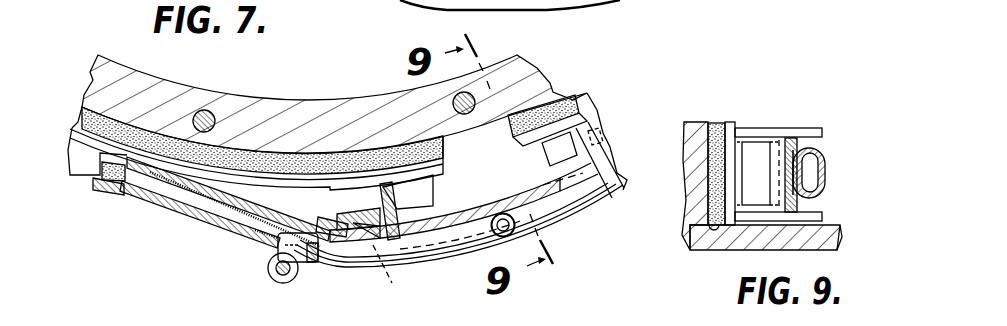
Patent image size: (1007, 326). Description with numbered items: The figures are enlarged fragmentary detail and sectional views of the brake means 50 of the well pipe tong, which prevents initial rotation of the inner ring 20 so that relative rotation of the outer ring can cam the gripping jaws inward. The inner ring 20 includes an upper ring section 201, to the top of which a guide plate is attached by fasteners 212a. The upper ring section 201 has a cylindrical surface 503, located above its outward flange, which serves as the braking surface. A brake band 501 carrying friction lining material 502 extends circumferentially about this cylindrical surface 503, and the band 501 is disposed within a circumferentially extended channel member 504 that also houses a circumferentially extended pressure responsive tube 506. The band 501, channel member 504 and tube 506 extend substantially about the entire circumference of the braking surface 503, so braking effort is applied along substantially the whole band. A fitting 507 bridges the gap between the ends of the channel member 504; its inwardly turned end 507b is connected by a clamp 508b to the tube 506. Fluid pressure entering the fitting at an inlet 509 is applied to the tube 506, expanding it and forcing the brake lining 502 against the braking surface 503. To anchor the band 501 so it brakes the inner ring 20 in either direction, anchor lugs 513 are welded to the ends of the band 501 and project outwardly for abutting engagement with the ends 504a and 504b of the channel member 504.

In FIG. 7, the upper ring section 201 is at (97, 77).
In FIG. 9, the upper ring section 201 is at (688, 217).
In FIG. 7, the fasteners 212a is at (207, 110).
In FIG. 7, the friction lining material 502 is at (328, 160).
In FIG. 9, the friction lining material 502 is at (713, 132).
In FIG. 7, the cylindrical surface 503 is at (248, 153).
In FIG. 9, the cylindrical surface 503 is at (717, 248).
In FIG. 7, the brake band 501 is at (453, 162).
In FIG. 9, the brake band 501 is at (731, 132).
In FIG. 7, the anchor lugs 513 is at (425, 190).
In FIG. 9, the anchor lugs 513 is at (756, 157).
In FIG. 7, the channel member 504 is at (107, 188).
In FIG. 7, the end of channel member 504a is at (362, 236).
In FIG. 7, the end of channel member 504b is at (615, 105).
In FIG. 7, the pressure responsive tube 506 is at (165, 182).
In FIG. 9, the pressure responsive tube 506 is at (827, 173).
In FIG. 7, the fitting 507 is at (452, 258).
In FIG. 7, the end of fitting 507b is at (342, 258).
In FIG. 7, the clamp 508b is at (277, 245).
In FIG. 7, the inlet 509 is at (548, 226).
In FIG. 7, the brake means 50 is at (134, 206).
In FIG. 9, the brake means 50 is at (827, 149).
In FIG. 9, the inner ring assembly 20 is at (838, 235).